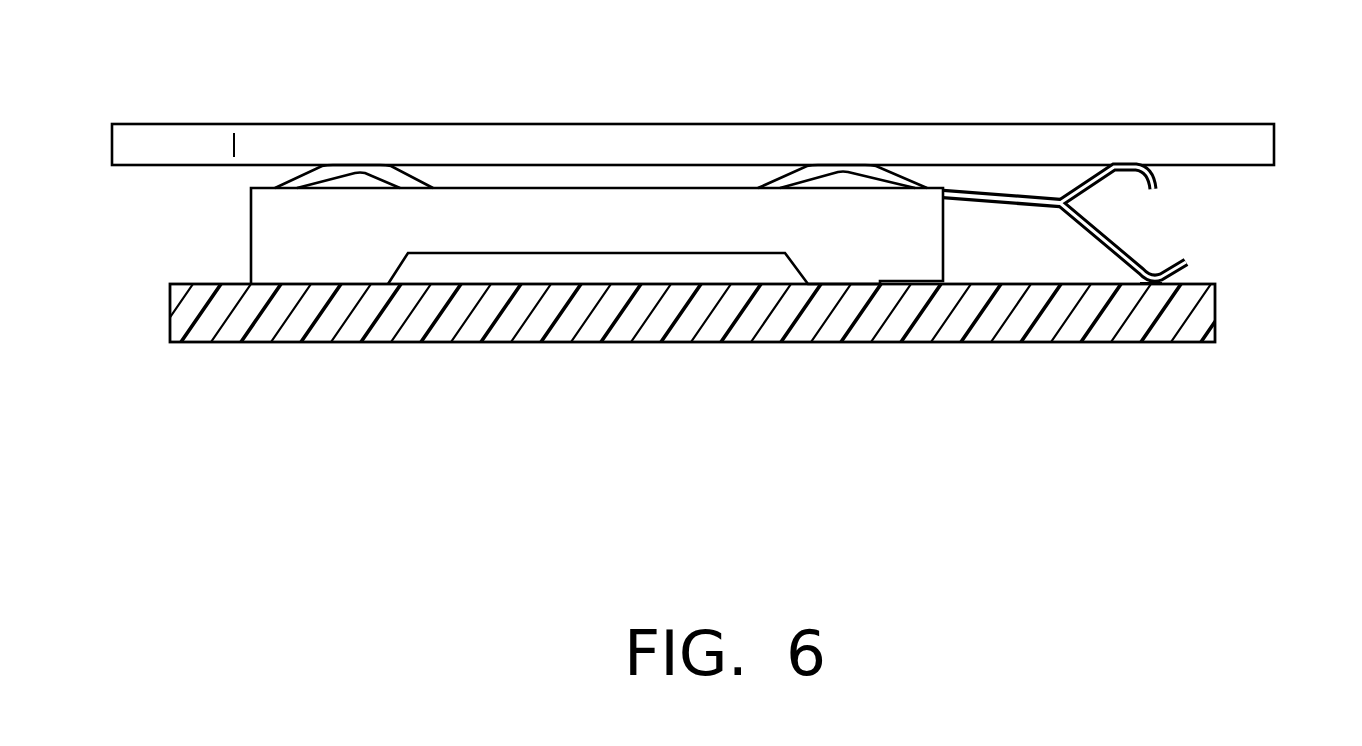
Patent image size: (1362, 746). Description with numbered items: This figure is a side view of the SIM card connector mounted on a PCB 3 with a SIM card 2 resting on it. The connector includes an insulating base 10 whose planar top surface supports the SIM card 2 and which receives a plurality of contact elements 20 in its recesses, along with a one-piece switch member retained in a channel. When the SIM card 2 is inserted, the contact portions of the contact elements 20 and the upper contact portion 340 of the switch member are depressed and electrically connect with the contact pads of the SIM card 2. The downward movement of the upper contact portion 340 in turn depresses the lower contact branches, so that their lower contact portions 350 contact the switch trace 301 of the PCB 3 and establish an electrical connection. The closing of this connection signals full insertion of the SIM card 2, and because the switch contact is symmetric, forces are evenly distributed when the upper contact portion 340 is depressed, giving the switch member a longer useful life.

The SIM card 2 is at (287, 135).
The PCB 3 is at (257, 327).
The insulating base 10 is at (249, 242).
The contact elements 20 is at (360, 173).
The upper contact portion 340 is at (1147, 164).
The lower contact portions 350 is at (1142, 241).
The switch trace 301 is at (1153, 284).